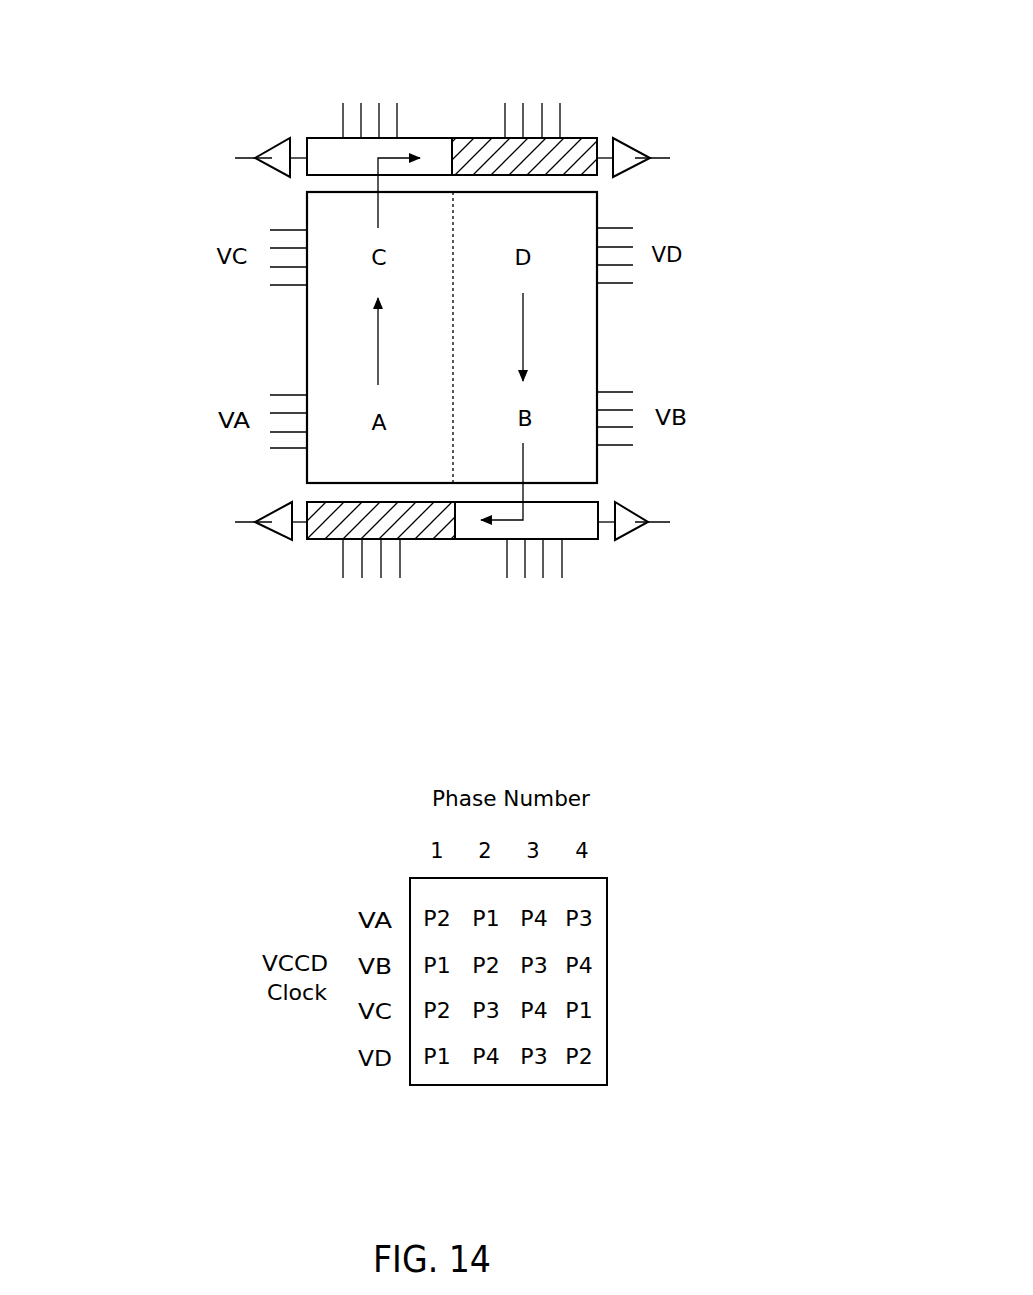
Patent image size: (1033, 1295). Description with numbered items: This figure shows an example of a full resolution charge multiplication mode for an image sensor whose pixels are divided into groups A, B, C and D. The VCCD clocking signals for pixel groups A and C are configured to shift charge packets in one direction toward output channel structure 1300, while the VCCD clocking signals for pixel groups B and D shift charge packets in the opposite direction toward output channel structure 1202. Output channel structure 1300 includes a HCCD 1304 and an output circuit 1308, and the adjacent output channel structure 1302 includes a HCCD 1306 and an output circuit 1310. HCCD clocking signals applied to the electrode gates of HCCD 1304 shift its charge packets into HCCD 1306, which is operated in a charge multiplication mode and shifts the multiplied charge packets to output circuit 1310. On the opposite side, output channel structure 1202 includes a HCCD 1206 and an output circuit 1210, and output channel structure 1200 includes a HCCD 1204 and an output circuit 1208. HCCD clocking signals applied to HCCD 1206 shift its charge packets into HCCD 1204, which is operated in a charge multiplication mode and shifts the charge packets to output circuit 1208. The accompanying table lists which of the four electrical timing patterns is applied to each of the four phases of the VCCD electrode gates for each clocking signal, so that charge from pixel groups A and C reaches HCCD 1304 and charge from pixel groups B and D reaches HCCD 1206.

The output channel structure 1300 is at (230, 67).
The output channel structure 1302 is at (462, 67).
The output channel structure 1200 is at (233, 611).
The output channel structure 1202 is at (680, 611).
The output circuit 1308 is at (258, 157).
The output circuit 1310 is at (648, 158).
The output circuit 1208 is at (256, 522).
The output circuit 1210 is at (650, 522).
The HCCD 1304 is at (307, 176).
The HCCD 1306 is at (599, 177).
The HCCD 1204 is at (307, 540).
The HCCD 1206 is at (598, 540).